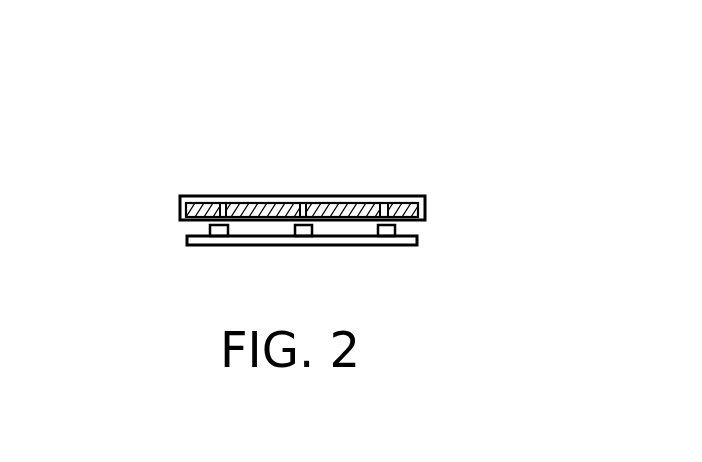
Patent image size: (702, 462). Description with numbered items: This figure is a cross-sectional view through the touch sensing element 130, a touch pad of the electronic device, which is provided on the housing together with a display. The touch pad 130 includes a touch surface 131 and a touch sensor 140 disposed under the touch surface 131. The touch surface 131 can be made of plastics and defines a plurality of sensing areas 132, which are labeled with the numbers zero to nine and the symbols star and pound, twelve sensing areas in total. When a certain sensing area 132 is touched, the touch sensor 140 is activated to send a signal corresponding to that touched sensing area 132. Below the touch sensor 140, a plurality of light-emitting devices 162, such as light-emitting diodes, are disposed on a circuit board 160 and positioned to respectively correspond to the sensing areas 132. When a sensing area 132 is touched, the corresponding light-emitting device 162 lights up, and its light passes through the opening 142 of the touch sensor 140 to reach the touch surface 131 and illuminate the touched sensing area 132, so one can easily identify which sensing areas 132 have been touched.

The touch sensing element 130 is at (143, 145).
The touch surface 131 is at (402, 198).
The sensing areas 132 is at (220, 196).
The touch sensor 140 is at (424, 207).
The opening 142 is at (307, 198).
The circuit board 160 is at (417, 240).
The light-emitting devices 162 is at (396, 228).